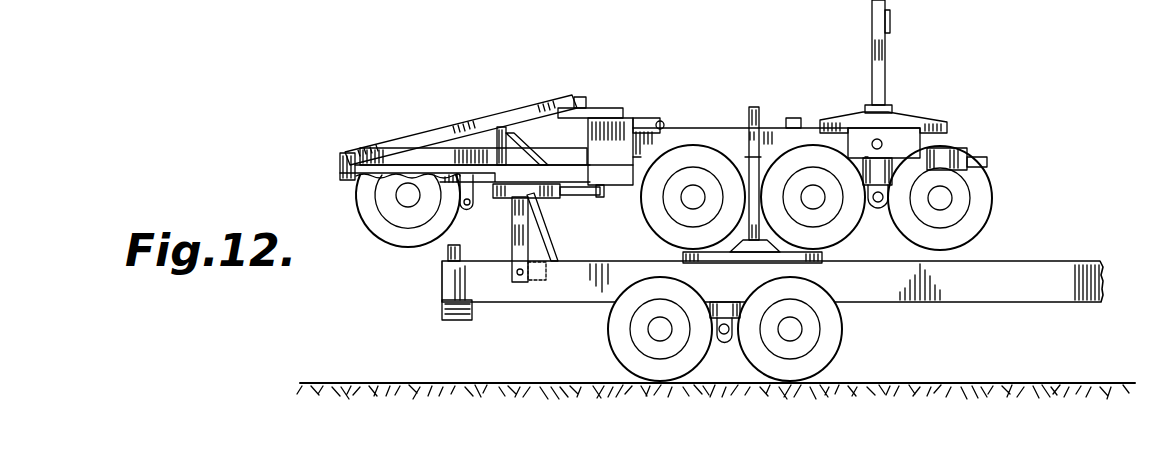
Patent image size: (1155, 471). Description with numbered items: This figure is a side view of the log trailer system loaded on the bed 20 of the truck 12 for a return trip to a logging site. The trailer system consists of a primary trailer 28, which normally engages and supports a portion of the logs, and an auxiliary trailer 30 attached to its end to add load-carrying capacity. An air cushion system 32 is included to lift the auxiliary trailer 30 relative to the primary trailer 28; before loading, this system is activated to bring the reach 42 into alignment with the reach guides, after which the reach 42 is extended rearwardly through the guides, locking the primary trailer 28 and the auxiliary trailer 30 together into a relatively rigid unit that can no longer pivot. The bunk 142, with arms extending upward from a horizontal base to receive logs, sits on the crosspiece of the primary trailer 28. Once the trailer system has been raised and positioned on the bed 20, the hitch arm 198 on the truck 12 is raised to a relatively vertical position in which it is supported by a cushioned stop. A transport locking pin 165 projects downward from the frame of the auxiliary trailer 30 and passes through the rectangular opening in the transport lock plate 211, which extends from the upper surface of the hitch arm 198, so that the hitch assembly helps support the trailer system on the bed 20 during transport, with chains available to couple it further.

The truck 12 is at (772, 313).
The bed 20 is at (878, 290).
The primary trailer 28 is at (970, 120).
The auxiliary trailer 30 is at (489, 108).
The air cushion system 32 is at (760, 117).
The reach 42 is at (452, 150).
The bunk 142 is at (883, 53).
The transport locking pin 165 is at (545, 200).
The hitch arm 198 is at (507, 217).
The transport lock plate 211 is at (537, 205).